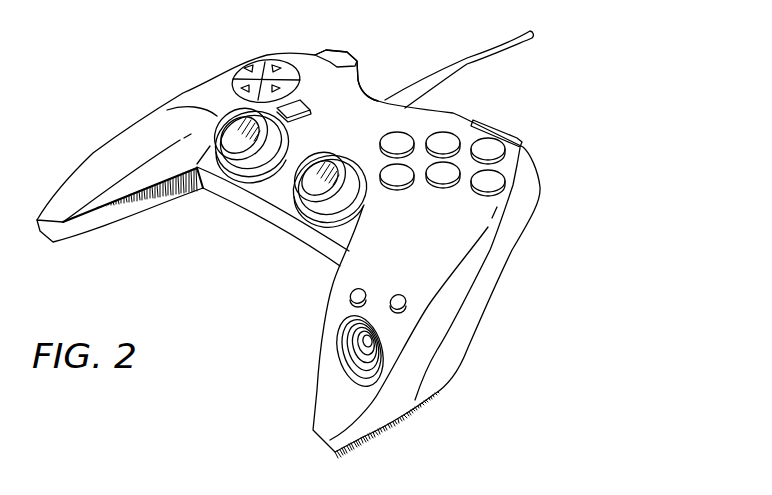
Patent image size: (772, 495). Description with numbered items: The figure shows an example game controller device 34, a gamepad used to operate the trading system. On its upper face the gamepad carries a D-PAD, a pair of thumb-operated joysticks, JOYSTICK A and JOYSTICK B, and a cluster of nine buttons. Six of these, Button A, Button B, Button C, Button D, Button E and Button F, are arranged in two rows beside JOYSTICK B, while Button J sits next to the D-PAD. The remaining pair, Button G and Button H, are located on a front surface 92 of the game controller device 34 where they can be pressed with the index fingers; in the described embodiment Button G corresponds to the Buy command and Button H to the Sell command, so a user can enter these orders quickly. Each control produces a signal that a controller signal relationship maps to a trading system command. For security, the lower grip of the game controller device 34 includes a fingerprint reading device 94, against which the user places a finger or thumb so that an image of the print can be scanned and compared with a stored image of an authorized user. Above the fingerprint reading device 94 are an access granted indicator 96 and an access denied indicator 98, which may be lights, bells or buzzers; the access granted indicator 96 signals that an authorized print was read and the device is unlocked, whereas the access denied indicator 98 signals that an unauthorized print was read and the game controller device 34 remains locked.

The game controller device 34 is at (122, 286).
The front surface 92 is at (364, 90).
The fingerprint reading device 94 is at (345, 391).
The access granted indicator 96 is at (345, 288).
The access denied indicator 98 is at (394, 304).
The Button A is at (398, 133).
The Button B is at (453, 140).
The Button C is at (500, 148).
The Button D is at (394, 178).
The Button E is at (438, 177).
The Button F is at (497, 179).
The Button G is at (340, 56).
The Button H is at (495, 120).
The Button J is at (298, 106).
The D-pad D-PAD is at (240, 76).
The Joystick A JOYSTICK A is at (167, 110).
The Joystick B JOYSTICK B is at (297, 197).